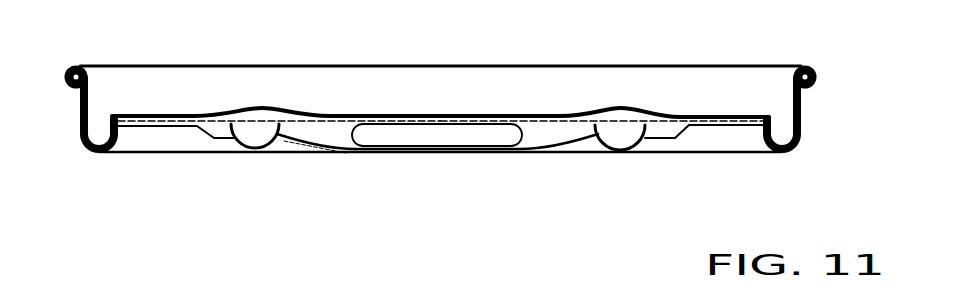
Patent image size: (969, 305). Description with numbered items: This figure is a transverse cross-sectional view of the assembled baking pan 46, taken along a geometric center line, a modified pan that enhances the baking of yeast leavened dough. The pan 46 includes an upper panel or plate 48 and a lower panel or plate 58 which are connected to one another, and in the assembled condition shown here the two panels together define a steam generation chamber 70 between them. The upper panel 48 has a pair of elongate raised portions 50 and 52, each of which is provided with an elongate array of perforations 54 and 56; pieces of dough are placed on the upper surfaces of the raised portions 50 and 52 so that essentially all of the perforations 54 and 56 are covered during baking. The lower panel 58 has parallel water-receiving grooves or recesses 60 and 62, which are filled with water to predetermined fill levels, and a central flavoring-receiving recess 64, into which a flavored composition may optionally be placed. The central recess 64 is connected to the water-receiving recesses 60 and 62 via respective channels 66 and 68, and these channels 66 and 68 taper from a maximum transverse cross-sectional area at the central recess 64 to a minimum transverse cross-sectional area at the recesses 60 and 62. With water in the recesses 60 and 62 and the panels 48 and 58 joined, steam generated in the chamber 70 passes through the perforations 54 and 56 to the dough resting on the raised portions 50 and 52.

The baking pan 46 is at (152, 172).
The upper panel 48 is at (461, 62).
The raised portion 50 is at (222, 122).
The raised portion 52 is at (597, 116).
The perforations 54 is at (274, 108).
The perforations 56 is at (650, 109).
The lower panel 58 is at (668, 163).
The water-receiving recess 60 is at (254, 150).
The water-receiving recess 62 is at (626, 151).
The flavoring-receiving recess 64 is at (447, 134).
The channel 66 is at (332, 131).
The channel 68 is at (537, 133).
The steam generation chamber 70 is at (240, 149).